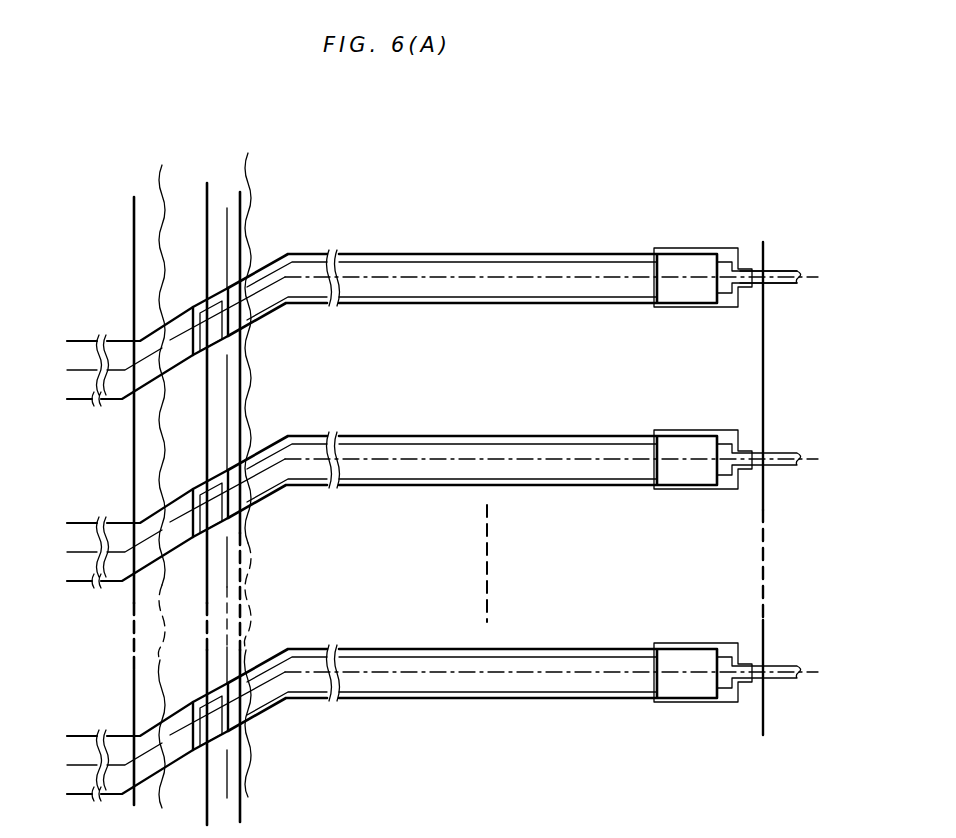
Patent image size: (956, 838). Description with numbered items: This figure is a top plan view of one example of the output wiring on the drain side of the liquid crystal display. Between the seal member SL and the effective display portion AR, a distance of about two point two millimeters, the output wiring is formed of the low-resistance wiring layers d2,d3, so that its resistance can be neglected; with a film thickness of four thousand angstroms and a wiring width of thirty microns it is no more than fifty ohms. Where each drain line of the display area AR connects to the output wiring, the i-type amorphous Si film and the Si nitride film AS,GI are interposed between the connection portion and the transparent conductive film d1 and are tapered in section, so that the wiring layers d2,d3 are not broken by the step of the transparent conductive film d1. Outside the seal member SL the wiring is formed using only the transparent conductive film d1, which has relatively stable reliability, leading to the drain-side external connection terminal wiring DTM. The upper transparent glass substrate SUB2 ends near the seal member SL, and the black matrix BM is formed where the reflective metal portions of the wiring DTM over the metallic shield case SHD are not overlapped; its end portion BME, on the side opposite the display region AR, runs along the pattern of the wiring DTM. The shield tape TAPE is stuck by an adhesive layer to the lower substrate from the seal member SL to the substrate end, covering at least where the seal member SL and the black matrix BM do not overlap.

The upper transparent glass substrate SUB2 is at (111, 488).
The seal member SL is at (248, 158).
The black matrix BM is at (227, 245).
The end portion of the black matrix BME is at (207, 295).
The drain-side wiring external connection terminal DTM is at (68, 370).
The shield tape TAPE is at (237, 402).
The metallic shield case SHD is at (205, 600).
The transparent conductive film d1 is at (310, 252).
The wiring layers d2,d3 is at (468, 255).
The i-type amorphous Si film and Si nitride film AS,GI is at (705, 257).
The effective display portion AR is at (823, 335).